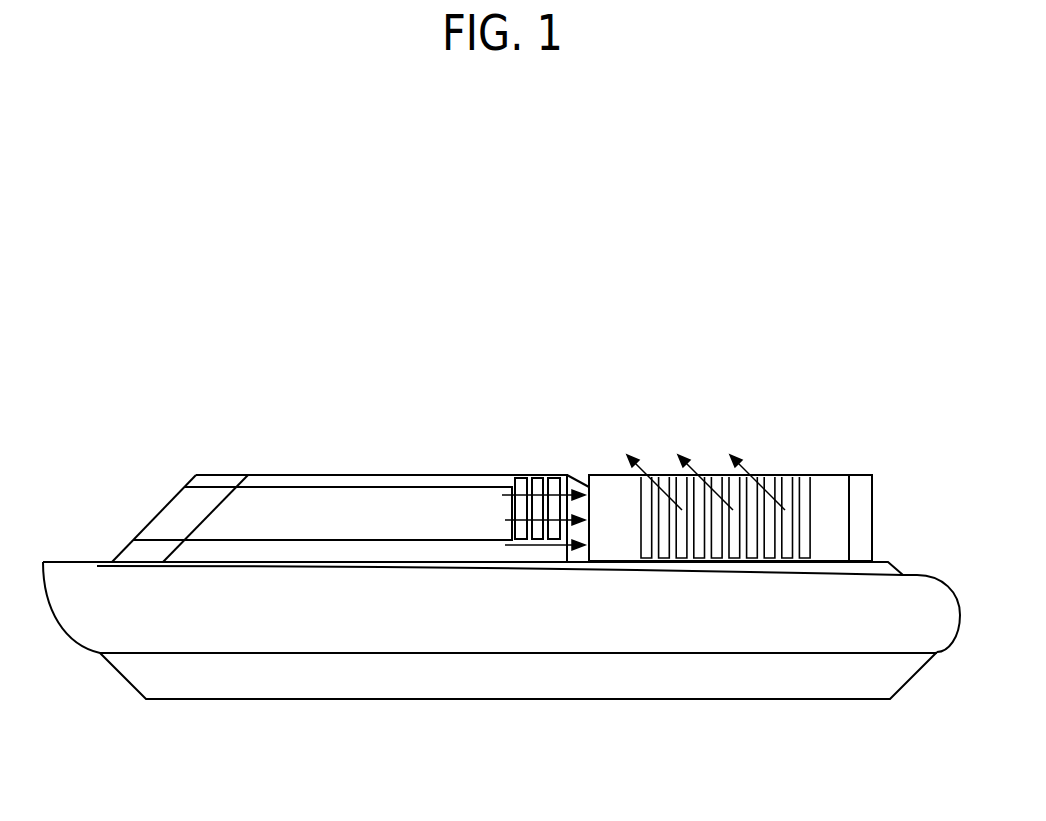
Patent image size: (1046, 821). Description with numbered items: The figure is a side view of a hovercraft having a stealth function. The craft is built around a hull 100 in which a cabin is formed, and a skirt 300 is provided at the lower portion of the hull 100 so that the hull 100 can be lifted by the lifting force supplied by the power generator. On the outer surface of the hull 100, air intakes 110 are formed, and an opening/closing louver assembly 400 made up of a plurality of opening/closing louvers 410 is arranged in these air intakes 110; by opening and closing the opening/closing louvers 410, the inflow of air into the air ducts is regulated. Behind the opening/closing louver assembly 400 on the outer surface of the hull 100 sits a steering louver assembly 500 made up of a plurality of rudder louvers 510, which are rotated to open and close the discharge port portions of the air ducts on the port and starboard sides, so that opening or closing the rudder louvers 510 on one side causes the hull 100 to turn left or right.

The hull 100 is at (350, 467).
The air intakes 110 is at (532, 508).
The skirt 300 is at (400, 622).
The opening/closing louver assembly 400 is at (537, 554).
The opening/closing louvers 410 is at (555, 505).
The steering louver assembly 500 is at (730, 582).
The rudder louvers 510 is at (715, 542).